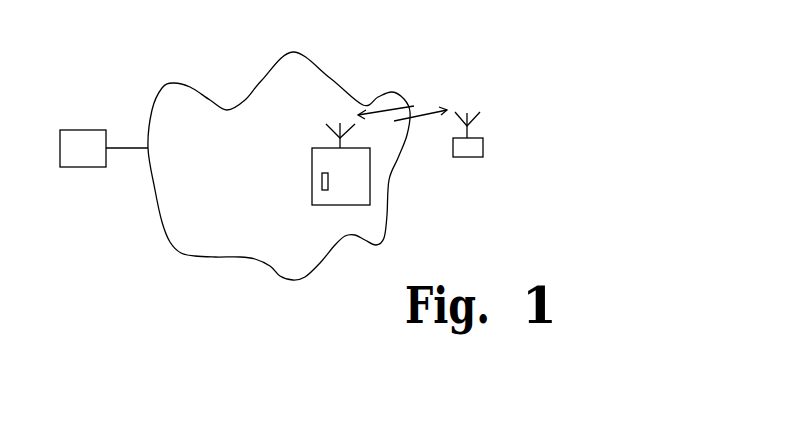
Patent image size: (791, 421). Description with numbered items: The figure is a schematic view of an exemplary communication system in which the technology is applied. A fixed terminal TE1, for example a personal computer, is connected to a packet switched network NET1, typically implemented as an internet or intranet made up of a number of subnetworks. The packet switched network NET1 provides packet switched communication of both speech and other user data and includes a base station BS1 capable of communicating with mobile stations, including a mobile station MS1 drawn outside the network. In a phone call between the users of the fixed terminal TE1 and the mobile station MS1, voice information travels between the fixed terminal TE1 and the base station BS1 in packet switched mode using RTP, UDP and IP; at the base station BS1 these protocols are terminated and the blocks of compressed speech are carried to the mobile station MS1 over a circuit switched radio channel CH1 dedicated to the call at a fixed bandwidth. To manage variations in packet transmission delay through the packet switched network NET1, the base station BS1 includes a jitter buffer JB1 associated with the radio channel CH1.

The fixed terminal TE1 is at (83, 167).
The packet switched network NET1 is at (292, 280).
The base station BS1 is at (330, 205).
The jitter buffer JB1 is at (322, 179).
The mobile station MS1 is at (463, 157).
The radio channel CH1 is at (412, 118).